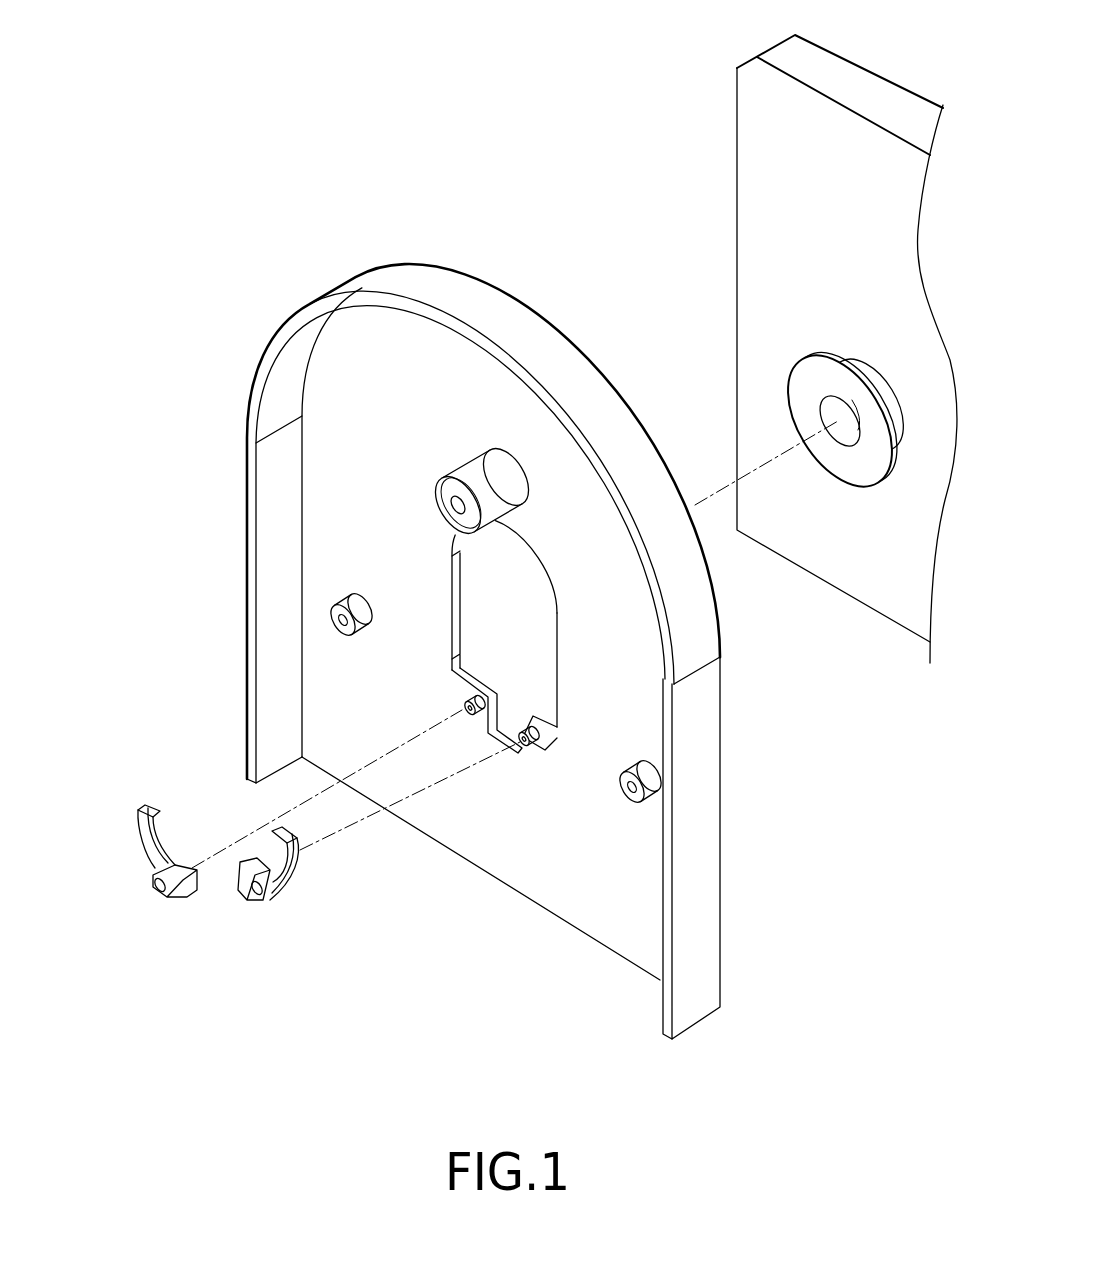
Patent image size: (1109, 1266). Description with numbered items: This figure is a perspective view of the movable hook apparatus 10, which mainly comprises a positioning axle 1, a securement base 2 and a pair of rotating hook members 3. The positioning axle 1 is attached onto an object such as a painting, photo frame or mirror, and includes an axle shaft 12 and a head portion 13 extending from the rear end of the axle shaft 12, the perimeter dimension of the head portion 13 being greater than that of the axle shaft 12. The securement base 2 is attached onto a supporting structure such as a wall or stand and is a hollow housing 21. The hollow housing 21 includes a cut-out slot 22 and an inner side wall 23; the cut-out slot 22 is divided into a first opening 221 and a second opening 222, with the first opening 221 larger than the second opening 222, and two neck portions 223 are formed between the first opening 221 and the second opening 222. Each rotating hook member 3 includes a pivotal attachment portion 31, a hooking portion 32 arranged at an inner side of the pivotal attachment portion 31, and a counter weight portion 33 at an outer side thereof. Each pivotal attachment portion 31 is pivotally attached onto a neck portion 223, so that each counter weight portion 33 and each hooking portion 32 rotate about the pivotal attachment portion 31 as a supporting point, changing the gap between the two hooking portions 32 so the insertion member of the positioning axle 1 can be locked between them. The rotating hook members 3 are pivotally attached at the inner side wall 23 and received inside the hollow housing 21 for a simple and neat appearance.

The movable hook apparatus 10 is at (462, 32).
The positioning axle 1 is at (655, 183).
The axle shaft 12 is at (880, 383).
The head portion 13 is at (807, 391).
The securement base 2 is at (417, 262).
The hollow housing 21 is at (697, 875).
The cut-out slot 22 is at (168, 493).
The first opening 221 is at (482, 592).
The second opening 222 is at (458, 720).
The neck portion 223 is at (545, 740).
The inner side wall 23 is at (565, 892).
The rotating hook member 3 is at (229, 917).
The pivotal attachment portion 31 is at (168, 893).
The hooking portion 32 is at (148, 898).
The counter weight portion 33 is at (152, 814).